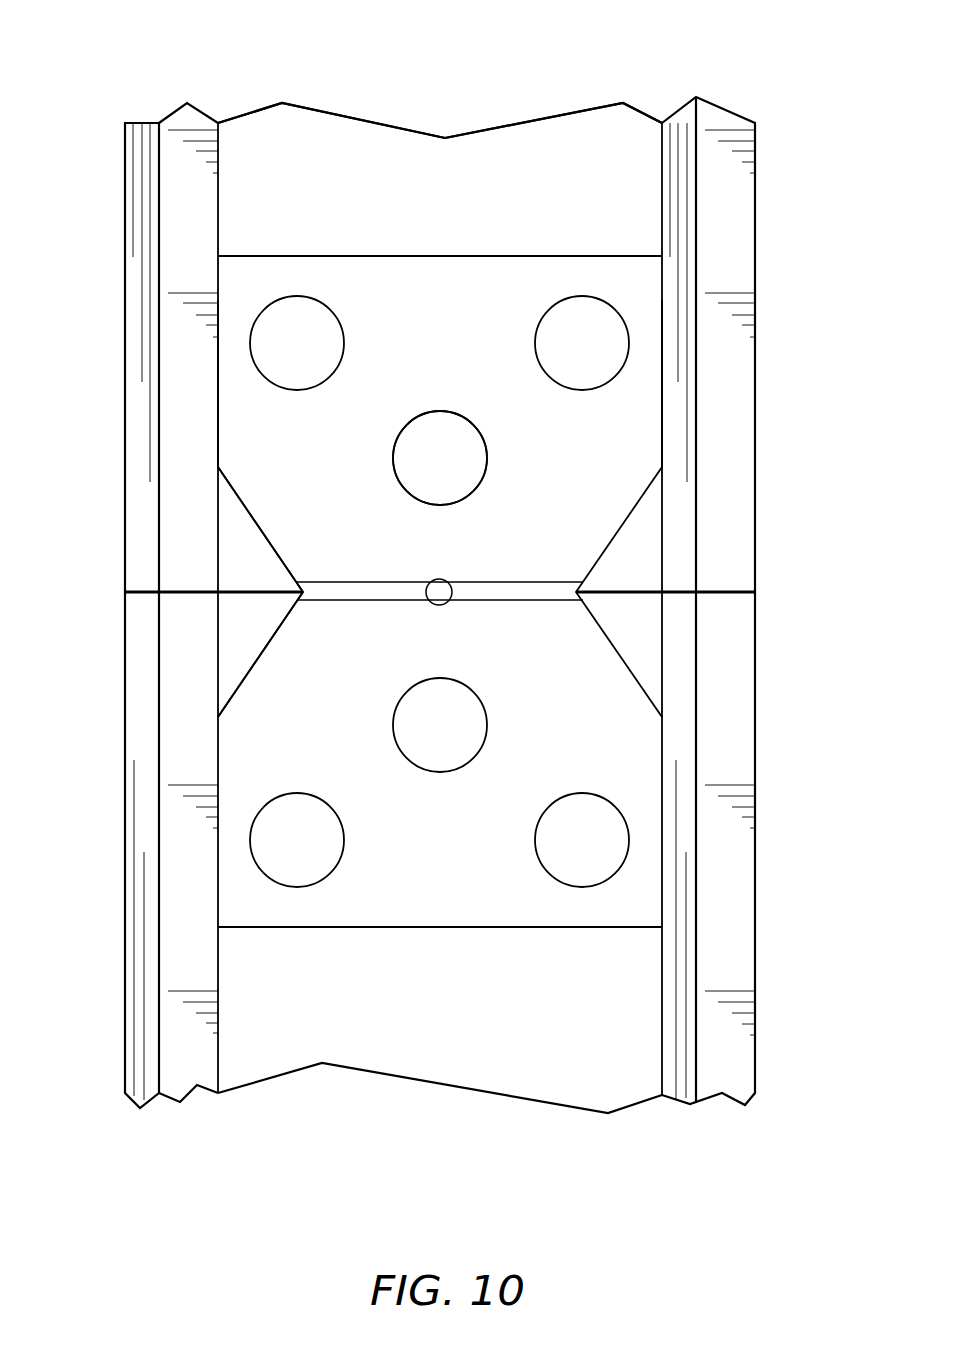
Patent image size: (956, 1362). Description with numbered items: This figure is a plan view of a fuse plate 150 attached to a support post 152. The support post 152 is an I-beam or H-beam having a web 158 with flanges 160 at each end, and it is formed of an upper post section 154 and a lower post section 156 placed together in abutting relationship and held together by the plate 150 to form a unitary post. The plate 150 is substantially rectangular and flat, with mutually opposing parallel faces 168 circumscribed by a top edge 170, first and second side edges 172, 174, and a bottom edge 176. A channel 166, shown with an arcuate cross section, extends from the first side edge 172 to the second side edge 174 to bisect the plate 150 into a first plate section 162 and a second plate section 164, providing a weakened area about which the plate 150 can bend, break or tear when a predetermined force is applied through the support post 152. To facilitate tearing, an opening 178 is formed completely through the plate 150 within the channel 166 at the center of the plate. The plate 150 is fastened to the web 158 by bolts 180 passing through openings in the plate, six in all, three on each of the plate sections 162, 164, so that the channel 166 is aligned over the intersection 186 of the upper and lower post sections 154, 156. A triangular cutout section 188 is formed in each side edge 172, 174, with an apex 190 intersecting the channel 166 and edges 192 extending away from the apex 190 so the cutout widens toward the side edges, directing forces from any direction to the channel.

The fuse plate 150 is at (461, 281).
The support post 152 is at (364, 194).
The upper post section 154 is at (316, 187).
The lower post section 156 is at (472, 1032).
The web 158 is at (595, 155).
The flanges 160 is at (742, 223).
The first plate section 162 is at (306, 531).
The second plate section 164 is at (287, 702).
The channel 166 is at (403, 594).
The faces 168 is at (466, 379).
The top edge 170 is at (373, 261).
The first side edge 172 is at (221, 379).
The second side edge 174 is at (659, 379).
The bottom edge 176 is at (373, 927).
The opening 178 is at (444, 601).
The bolt 180 is at (315, 823).
The intersection 186 is at (643, 594).
The cutout section 188 is at (231, 604).
The apex 190 is at (316, 591).
The edges of the cutout section 192 is at (264, 523).